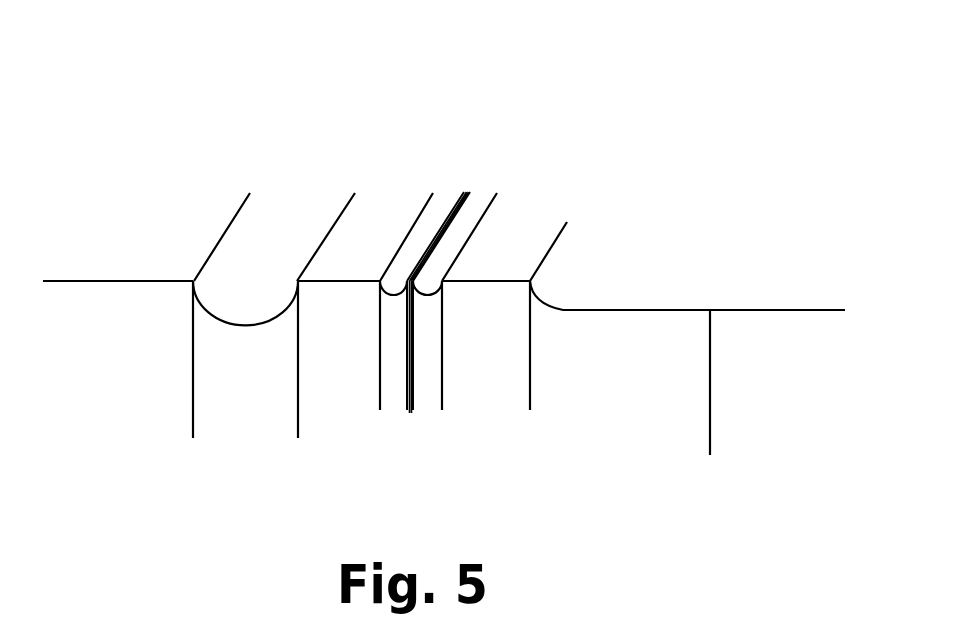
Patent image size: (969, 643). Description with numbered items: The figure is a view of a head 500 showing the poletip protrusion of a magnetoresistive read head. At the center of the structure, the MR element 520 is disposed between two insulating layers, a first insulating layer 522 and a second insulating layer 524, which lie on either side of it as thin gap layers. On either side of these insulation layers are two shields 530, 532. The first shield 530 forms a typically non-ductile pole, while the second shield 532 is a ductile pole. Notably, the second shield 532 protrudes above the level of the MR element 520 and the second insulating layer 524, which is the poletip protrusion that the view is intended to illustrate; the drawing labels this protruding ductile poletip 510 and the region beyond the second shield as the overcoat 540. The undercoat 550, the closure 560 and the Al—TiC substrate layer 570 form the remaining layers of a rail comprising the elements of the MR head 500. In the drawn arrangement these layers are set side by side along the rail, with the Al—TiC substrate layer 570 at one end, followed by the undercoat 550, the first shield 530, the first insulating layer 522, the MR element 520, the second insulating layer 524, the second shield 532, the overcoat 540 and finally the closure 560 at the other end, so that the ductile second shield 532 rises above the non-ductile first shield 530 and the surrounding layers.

The head 500 is at (138, 62).
The protruding ductile poletip 510 is at (708, 162).
The MR element 520 is at (481, 132).
The insulating layer g1 522 is at (372, 462).
The insulating layer g2 524 is at (462, 462).
The first shield 530 is at (326, 420).
The second shield 532 is at (496, 412).
The overcoat OC 540 is at (615, 432).
The undercoat 550 is at (234, 445).
The closure 560 is at (807, 435).
The Al—TiC substrate layer 570 is at (95, 440).